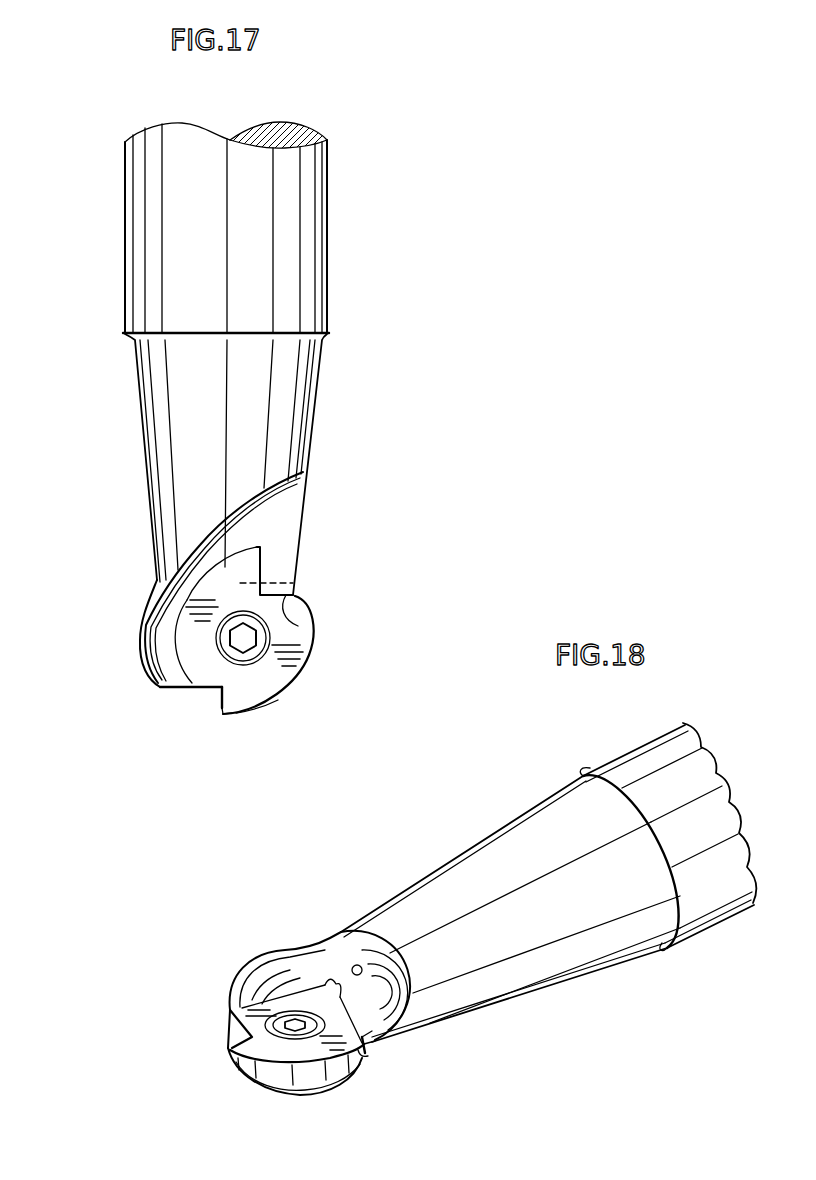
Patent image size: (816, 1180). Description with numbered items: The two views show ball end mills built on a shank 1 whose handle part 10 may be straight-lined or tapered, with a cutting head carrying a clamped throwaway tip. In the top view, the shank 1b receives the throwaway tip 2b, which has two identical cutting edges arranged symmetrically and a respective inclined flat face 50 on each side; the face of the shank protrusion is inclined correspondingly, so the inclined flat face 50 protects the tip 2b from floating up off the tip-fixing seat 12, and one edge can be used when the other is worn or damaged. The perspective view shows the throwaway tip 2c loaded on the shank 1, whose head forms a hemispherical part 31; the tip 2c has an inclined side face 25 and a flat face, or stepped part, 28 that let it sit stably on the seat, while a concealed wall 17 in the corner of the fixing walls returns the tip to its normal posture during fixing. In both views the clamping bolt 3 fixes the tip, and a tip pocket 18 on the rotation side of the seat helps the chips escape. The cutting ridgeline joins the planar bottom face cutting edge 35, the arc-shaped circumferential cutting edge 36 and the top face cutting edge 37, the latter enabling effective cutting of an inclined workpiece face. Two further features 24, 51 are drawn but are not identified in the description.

In FIG. 18, the shank 1 is at (603, 984).
In FIG. 17, the shank 1b is at (333, 273).
In FIG. 17, the throwaway tip 2b is at (277, 697).
In FIG. 18, the throwaway tip 2c is at (278, 1060).
In FIG. 17, the clamping bolt 3 is at (218, 641).
In FIG. 18, the handle part 10 is at (697, 940).
In FIG. 17, the tip-fixing seat 12 is at (197, 577).
In FIG. 18, the concealed wall 17 is at (335, 990).
In FIG. 17, the tip pocket 18 is at (287, 510).
In FIG. 18, the tip pocket 18 is at (288, 976).
In FIG. 17, the notch 24 is at (218, 704).
In FIG. 18, the side face 25 is at (372, 1040).
In FIG. 18, the flat face 28 is at (228, 1040).
In FIG. 17, the hemispherical part 31 is at (157, 676).
In FIG. 17, the bottom face cutting edge 35 is at (240, 714).
In FIG. 17, the circumferential cutting edge 36 is at (297, 683).
In FIG. 17, the top face cutting edge 37 is at (303, 603).
In FIG. 18, the top face cutting edge 37 is at (362, 1054).
In FIG. 17, the inclined flat face 50 is at (285, 571).
In FIG. 17, the bore 51 is at (305, 612).